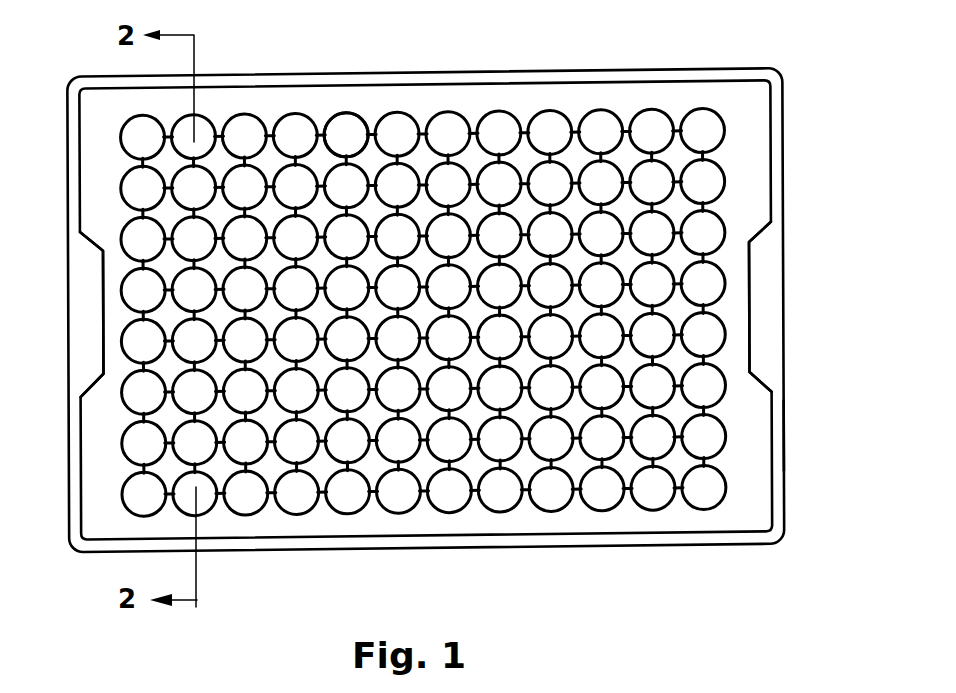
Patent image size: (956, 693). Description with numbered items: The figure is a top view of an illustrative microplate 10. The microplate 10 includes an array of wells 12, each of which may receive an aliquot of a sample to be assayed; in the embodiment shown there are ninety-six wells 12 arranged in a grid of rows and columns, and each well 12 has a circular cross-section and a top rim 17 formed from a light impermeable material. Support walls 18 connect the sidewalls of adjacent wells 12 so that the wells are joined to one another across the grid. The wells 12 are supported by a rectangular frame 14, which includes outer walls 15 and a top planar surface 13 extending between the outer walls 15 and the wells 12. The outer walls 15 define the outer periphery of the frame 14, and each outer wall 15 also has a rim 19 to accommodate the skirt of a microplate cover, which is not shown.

The microplate 10 is at (722, 60).
The wells 12 is at (713, 176).
The top planar surface 13 is at (755, 407).
The frame 14 is at (758, 184).
The outer walls 15 is at (462, 83).
The top rim 17 is at (351, 116).
The support walls 18 is at (318, 127).
The rim 19 is at (77, 395).